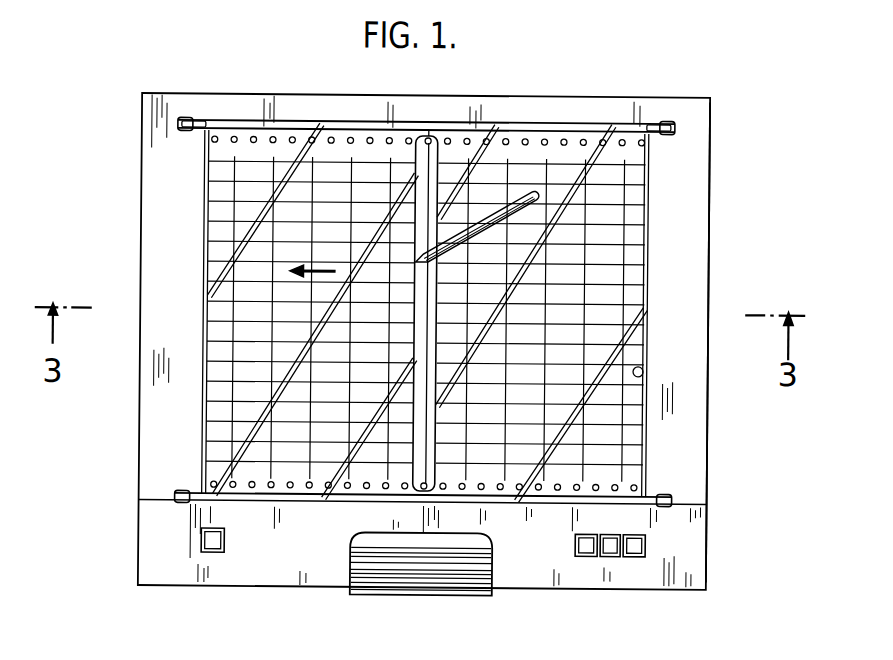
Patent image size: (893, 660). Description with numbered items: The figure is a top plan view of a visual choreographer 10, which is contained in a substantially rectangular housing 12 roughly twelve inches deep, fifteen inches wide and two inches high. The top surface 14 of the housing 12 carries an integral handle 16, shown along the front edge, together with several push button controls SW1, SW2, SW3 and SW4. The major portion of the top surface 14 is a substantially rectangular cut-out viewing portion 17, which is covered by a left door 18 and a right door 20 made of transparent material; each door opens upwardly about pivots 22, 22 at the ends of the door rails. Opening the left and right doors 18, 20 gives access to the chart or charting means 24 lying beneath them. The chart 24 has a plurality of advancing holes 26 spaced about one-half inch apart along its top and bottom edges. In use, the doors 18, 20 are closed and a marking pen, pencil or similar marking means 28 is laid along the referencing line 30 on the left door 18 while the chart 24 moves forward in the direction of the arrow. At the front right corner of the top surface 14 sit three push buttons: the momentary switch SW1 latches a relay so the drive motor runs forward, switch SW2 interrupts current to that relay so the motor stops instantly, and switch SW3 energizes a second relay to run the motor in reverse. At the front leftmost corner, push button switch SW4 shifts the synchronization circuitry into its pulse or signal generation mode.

The visual choreographer 10 is at (757, 124).
The housing 12 is at (714, 245).
The top surface 14 is at (703, 291).
The handle 16 is at (476, 587).
The cut-out viewing portion 17 is at (647, 366).
The left door 18 is at (238, 172).
The right door 20 is at (611, 203).
The pivot 22 is at (188, 507).
The chart 24 is at (611, 264).
The advancing holes 26 is at (543, 139).
The marking means 28 is at (497, 212).
The referencing line 30 is at (414, 339).
The first push button switch SW1 is at (588, 548).
The second push button switch SW2 is at (609, 550).
The third push button switch SW3 is at (636, 548).
The fourth push button switch SW4 is at (224, 546).